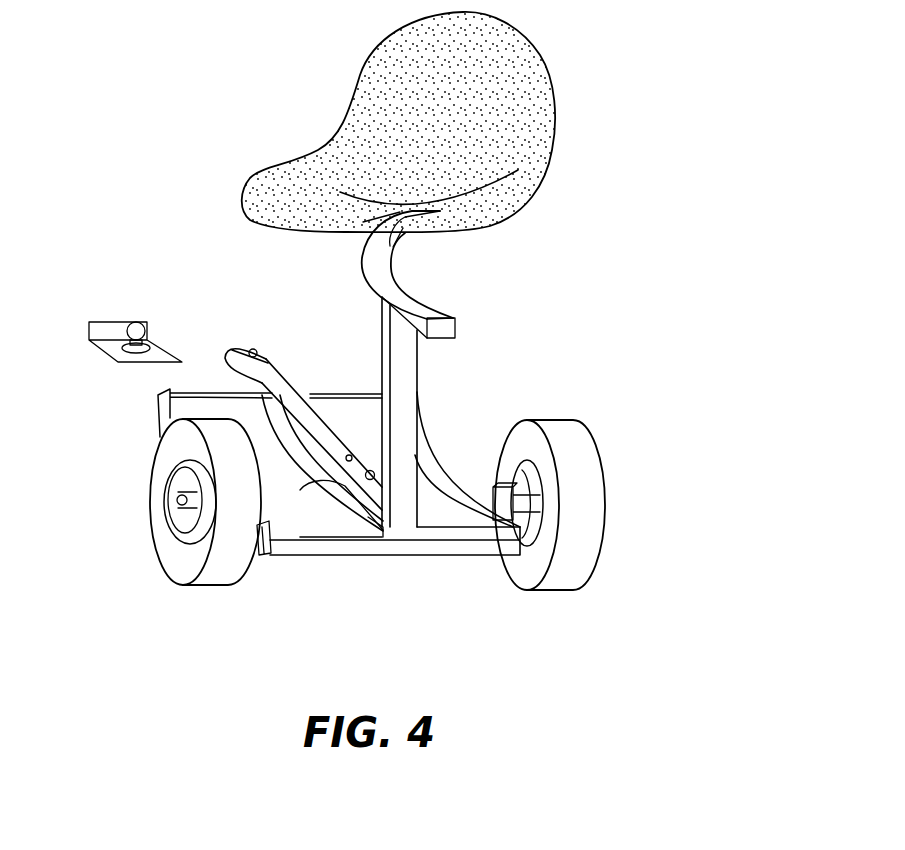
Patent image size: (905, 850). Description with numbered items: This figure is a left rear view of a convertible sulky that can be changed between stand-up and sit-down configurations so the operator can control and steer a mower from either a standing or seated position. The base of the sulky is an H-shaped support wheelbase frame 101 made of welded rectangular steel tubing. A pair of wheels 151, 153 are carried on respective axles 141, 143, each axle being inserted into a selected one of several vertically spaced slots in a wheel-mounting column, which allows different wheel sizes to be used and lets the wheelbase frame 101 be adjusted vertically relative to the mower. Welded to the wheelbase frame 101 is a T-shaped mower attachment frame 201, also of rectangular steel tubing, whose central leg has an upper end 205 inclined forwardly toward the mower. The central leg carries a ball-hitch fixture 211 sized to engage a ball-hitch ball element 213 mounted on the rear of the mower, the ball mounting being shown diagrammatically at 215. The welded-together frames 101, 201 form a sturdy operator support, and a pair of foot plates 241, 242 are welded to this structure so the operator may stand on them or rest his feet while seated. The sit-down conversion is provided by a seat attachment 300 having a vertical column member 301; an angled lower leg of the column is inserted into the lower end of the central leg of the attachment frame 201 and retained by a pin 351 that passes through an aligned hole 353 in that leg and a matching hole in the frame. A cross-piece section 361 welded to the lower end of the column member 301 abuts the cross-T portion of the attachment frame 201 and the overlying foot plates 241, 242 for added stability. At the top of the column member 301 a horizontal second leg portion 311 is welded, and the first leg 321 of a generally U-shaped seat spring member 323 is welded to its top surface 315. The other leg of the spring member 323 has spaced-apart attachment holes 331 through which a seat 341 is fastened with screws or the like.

The H-shaped support wheelbase frame 101 is at (360, 575).
The axle 141 is at (180, 502).
The axle 143 is at (533, 503).
The wheel 151 is at (172, 448).
The wheel 153 is at (565, 430).
The T-shaped mower attachment frame 201 is at (303, 395).
The upper end 205 is at (260, 387).
The ball-hitch fixture 211 is at (256, 349).
The ball-hitch ball element 213 is at (136, 322).
The ball-hitch ball element mounting 215 is at (103, 345).
The foot plate 241 is at (261, 556).
The foot plate 242 is at (425, 455).
The seat attachment 300 is at (612, 290).
The column member 301 is at (386, 341).
The second leg portion 311 is at (455, 333).
The top surface 315 is at (455, 320).
The first leg 321 is at (405, 300).
The U-shaped seat spring member 323 is at (361, 270).
The attachment holes 331 is at (395, 248).
The seat 341 is at (502, 42).
The pin 351 is at (301, 490).
The hole 353 is at (370, 468).
The cross-piece section 361 is at (435, 548).